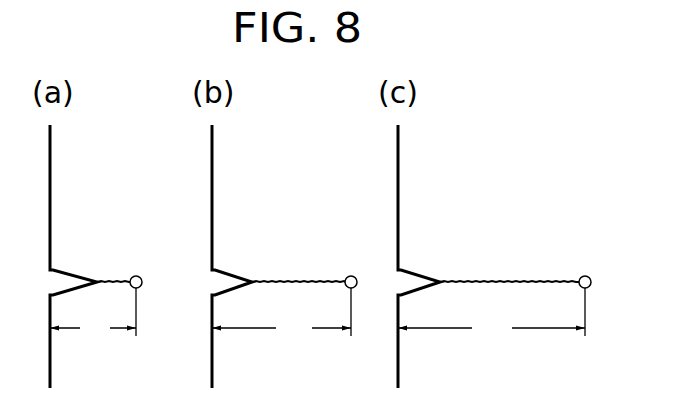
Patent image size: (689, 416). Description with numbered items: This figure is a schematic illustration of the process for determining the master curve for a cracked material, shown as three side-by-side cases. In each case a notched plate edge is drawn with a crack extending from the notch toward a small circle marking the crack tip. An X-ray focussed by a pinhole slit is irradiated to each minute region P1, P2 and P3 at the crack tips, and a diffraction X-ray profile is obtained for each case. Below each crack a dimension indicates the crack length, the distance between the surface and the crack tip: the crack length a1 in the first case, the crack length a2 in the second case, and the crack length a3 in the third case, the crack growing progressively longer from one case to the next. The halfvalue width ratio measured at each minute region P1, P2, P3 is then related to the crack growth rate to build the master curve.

The minute region at crack tip P1 is at (135, 277).
The minute region at crack tip P2 is at (350, 277).
The minute region at crack tip P3 is at (580, 277).
The crack length a1 is at (93, 317).
The crack length a2 is at (281, 317).
The crack length a3 is at (491, 317).